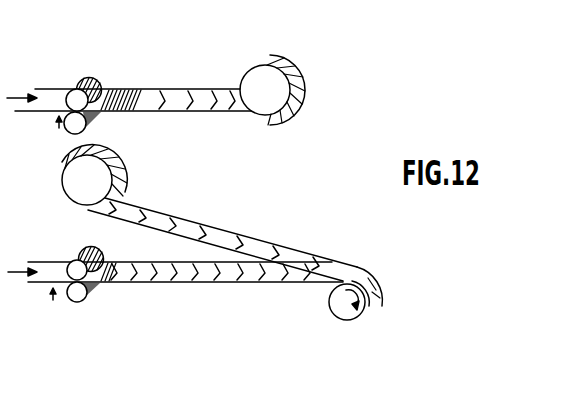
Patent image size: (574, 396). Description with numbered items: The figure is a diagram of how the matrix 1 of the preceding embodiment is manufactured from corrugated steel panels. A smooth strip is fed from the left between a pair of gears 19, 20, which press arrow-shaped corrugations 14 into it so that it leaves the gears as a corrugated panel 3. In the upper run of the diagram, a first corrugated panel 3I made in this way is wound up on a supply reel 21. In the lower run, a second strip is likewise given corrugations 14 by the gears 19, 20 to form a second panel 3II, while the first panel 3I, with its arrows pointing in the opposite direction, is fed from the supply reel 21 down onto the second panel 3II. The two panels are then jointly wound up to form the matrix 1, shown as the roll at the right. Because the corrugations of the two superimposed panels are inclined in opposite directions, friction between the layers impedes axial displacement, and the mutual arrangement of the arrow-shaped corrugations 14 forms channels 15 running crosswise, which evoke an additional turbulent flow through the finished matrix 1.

The matrix 1 is at (367, 308).
The corrugated steel panel 3 is at (200, 110).
The first corrugated panel 3I is at (223, 230).
The second corrugated panel 3II is at (166, 276).
The arrow-shaped corrugations 14 is at (193, 102).
The channels 15 is at (307, 284).
The gear 19 is at (66, 107).
The gear 20 is at (68, 131).
The supply reel 21 is at (271, 83).